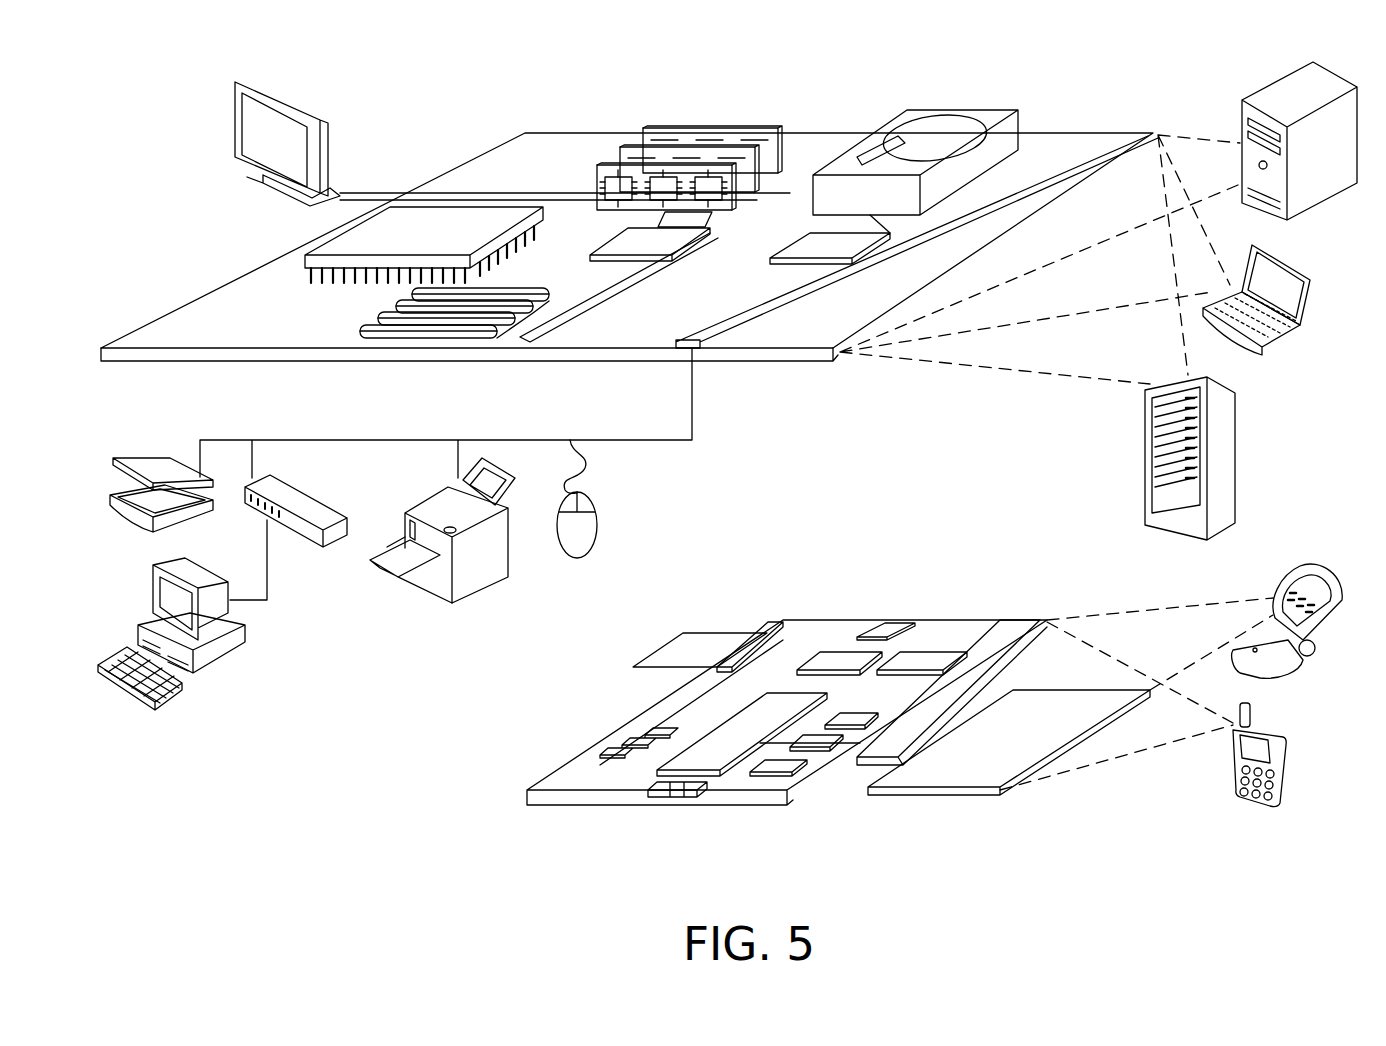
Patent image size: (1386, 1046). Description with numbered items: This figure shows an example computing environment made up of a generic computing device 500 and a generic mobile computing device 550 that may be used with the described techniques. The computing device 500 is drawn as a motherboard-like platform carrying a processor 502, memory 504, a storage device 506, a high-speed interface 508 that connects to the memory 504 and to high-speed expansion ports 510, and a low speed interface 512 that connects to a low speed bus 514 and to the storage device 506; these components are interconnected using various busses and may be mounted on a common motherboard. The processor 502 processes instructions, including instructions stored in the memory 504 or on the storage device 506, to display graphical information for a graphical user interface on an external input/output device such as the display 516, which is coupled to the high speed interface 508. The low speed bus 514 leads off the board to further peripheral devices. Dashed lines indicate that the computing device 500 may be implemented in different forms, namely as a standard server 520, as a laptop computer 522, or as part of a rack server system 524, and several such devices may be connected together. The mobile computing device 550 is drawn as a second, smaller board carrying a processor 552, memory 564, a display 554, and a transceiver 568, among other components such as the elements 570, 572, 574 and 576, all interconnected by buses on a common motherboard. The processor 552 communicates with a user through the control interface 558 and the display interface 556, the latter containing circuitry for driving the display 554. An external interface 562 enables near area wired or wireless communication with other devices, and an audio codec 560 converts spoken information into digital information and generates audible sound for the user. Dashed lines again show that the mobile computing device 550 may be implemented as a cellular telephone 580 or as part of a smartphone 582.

The computing device 500 is at (437, 104).
The processor 502 is at (305, 259).
The memory 504 is at (660, 128).
The storage device 506 is at (900, 118).
The high-speed interface 508 is at (630, 250).
The high-speed expansion ports 510 is at (385, 318).
The low speed interface 512 is at (810, 246).
The low speed bus 514 is at (697, 350).
The display 516 is at (235, 82).
The standard server 520 is at (1236, 118).
The laptop computer 522 is at (1322, 270).
The rack server system 524 is at (1143, 482).
The mobile computer device 550 is at (502, 800).
The processor 552 is at (713, 755).
The display 554 is at (963, 775).
The display interface 556 is at (785, 768).
The control interface 558 is at (822, 748).
The audio codec 560 is at (847, 720).
The external interface 562 is at (677, 795).
The memory 564 is at (630, 745).
The transceiver 568 is at (923, 660).
The small chip 570 is at (893, 623).
The strip component 572 is at (773, 633).
The flat component 574 is at (700, 633).
The chip 576 is at (840, 658).
The cellular telephone 580 is at (1296, 574).
The smartphone 582 is at (1233, 763).